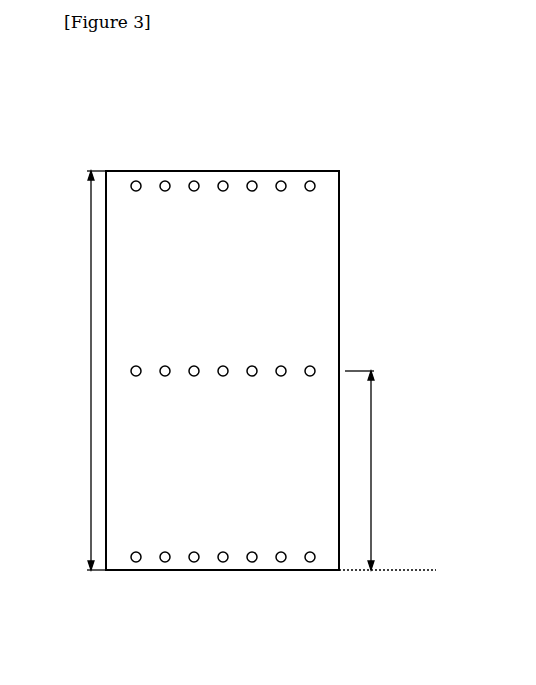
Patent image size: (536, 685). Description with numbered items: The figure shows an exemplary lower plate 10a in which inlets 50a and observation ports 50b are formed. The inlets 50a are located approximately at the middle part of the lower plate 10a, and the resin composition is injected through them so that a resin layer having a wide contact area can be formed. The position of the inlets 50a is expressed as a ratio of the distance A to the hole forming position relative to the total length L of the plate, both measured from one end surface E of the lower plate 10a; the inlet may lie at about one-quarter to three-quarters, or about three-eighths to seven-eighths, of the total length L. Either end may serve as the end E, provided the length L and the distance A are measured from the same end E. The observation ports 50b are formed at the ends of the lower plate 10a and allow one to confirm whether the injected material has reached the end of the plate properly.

The lower plate 10a is at (352, 128).
The observation port 50b is at (251, 171).
The inlet 50a is at (311, 365).
The total length L is at (88, 370).
The distance to the hole forming position A is at (365, 470).
The end surface E is at (391, 570).